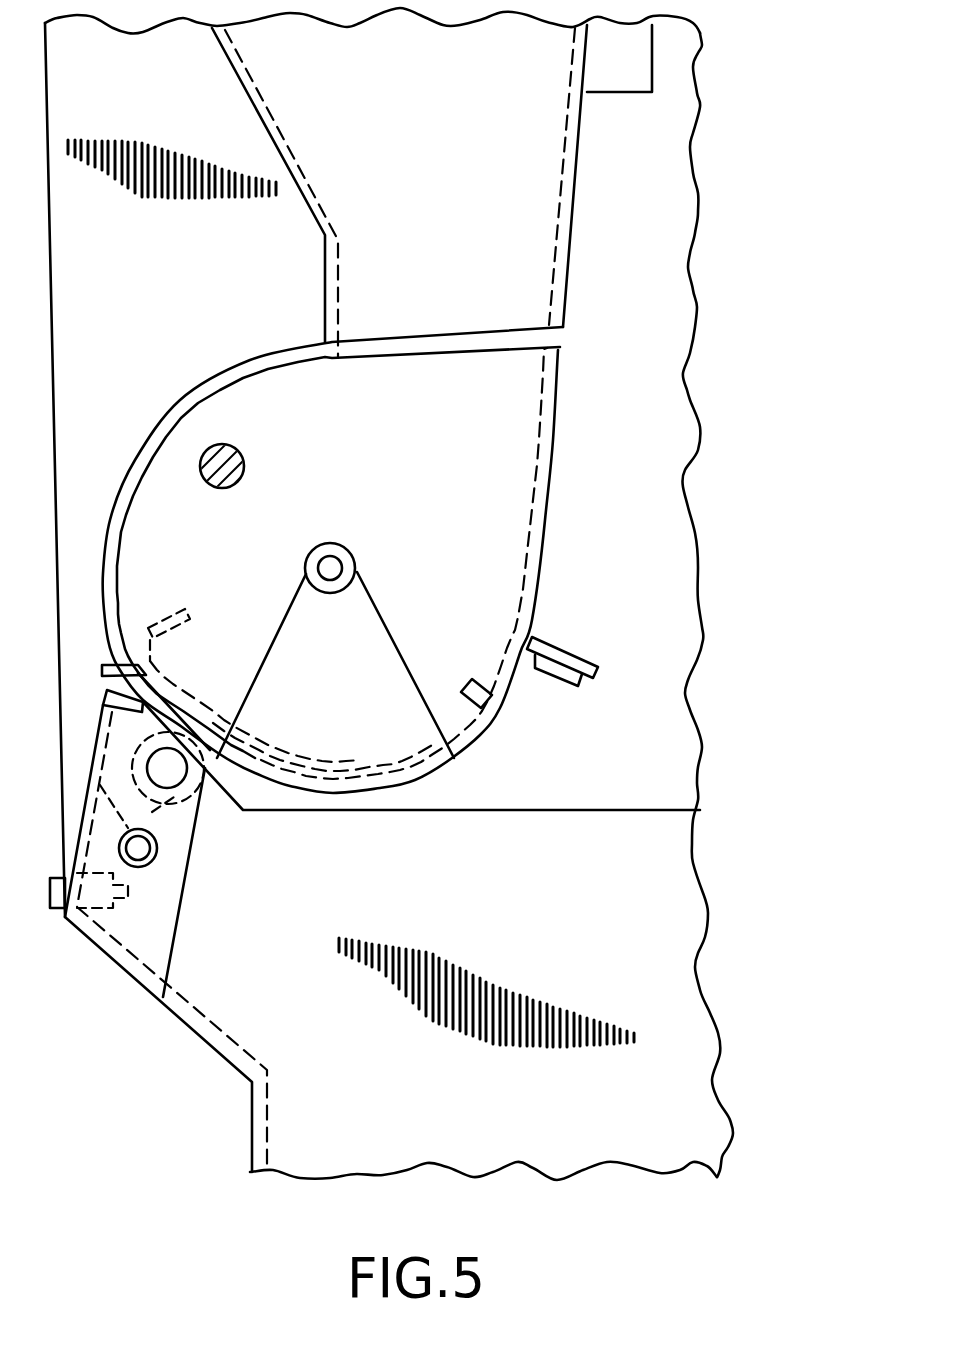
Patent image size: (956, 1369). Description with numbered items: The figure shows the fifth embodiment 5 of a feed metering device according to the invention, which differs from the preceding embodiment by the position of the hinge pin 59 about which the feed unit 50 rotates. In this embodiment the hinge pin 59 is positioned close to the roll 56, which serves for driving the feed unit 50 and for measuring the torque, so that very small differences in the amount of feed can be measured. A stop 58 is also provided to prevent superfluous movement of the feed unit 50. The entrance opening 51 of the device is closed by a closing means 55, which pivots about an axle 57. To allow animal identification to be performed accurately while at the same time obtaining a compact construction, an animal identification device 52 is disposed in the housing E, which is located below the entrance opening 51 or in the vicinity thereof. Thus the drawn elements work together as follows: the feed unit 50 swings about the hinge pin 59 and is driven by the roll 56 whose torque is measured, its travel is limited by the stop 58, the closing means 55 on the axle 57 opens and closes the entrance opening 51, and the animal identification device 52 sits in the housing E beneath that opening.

The fifth embodiment of the feed metering device 5 is at (575, 492).
The feed unit 50 is at (435, 762).
The entrance opening 51 is at (200, 402).
The animal identification device 52 is at (130, 932).
The closing means 55 is at (314, 702).
The roll 56 is at (190, 783).
The axle 57 is at (347, 557).
The stop 58 is at (560, 653).
The hinge pin 59 is at (237, 466).
The housing E is at (173, 955).